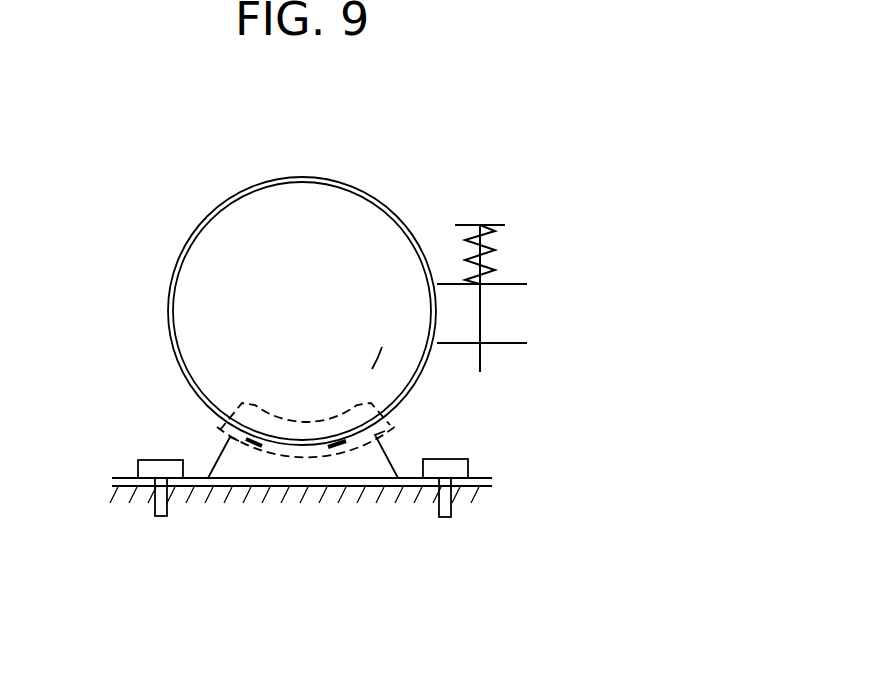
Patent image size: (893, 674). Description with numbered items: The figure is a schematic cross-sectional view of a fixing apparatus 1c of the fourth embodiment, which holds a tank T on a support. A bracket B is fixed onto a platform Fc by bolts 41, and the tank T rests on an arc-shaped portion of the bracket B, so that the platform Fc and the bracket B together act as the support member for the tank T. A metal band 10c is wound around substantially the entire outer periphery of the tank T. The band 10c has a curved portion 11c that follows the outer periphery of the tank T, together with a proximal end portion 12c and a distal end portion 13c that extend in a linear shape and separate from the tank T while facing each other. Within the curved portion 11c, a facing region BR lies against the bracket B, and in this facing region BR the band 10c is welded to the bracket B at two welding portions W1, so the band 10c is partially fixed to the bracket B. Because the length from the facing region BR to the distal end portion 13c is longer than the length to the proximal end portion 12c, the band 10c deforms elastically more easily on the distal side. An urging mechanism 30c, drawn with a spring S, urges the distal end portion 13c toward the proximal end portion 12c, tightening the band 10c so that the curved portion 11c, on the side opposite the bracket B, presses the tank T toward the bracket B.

The fixing apparatus 1c is at (313, 269).
The band 10c is at (438, 270).
The curved portion 11c is at (207, 200).
The proximal end portion 12c is at (530, 353).
The distal end portion 13c is at (517, 284).
The urging mechanism 30c is at (550, 290).
The spring S is at (497, 248).
The tank T is at (393, 363).
The bolts 41 is at (138, 460).
The bracket B is at (217, 462).
The facing region BR is at (330, 457).
The welding portions W1 is at (297, 457).
The platform Fc is at (475, 494).